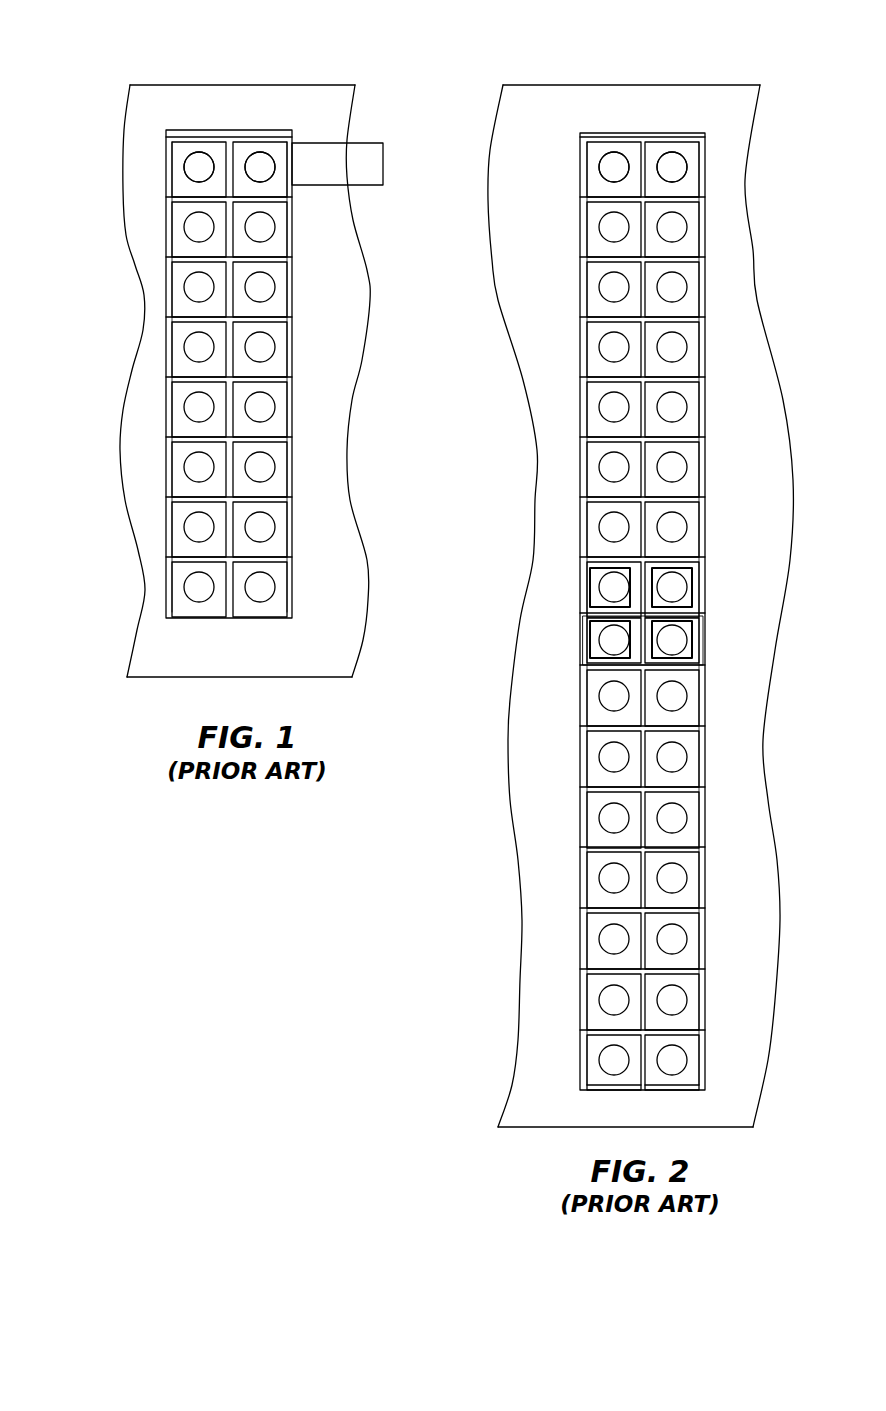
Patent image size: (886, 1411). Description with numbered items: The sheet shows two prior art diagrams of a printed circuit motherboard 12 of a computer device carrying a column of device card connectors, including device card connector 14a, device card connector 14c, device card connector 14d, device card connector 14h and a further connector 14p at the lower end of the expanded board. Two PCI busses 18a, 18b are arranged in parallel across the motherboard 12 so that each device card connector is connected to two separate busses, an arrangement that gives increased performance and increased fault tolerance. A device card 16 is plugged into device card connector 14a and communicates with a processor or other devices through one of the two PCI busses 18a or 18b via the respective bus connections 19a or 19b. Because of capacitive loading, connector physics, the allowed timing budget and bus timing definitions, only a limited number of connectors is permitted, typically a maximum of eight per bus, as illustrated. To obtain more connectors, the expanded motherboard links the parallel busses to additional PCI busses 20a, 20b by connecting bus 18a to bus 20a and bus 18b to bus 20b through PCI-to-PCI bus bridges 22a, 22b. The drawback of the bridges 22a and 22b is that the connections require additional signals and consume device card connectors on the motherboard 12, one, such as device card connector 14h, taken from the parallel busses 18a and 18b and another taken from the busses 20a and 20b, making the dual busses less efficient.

In FIG. 1, the printed circuit motherboard 12 is at (318, 93).
In FIG. 2, the printed circuit motherboard 12 is at (745, 110).
In FIG. 1, the device card connector 14a is at (165, 176).
In FIG. 2, the device card connector 14a is at (580, 168).
In FIG. 2, the device card connector 14c is at (577, 643).
In FIG. 1, the device card connector 14d is at (165, 352).
In FIG. 1, the device card connector 14h is at (165, 596).
In FIG. 2, the device card connector 14h is at (576, 584).
In FIG. 2, the terminal block position 14p is at (573, 1070).
In FIG. 1, the device card 16 is at (375, 163).
In FIG. 1, the PCI bus 18a is at (196, 124).
In FIG. 2, the PCI bus 18a is at (603, 127).
In FIG. 1, the PCI bus 18b is at (266, 124).
In FIG. 2, the PCI bus 18b is at (680, 127).
In FIG. 1, the bus connection 19a is at (205, 175).
In FIG. 2, the bus connection 19a is at (627, 173).
In FIG. 1, the bus connection 19b is at (270, 172).
In FIG. 2, the bus connection 19b is at (690, 163).
In FIG. 2, the PCI bus 20a is at (600, 1083).
In FIG. 2, the PCI bus 20b is at (668, 1083).
In FIG. 2, the PCI-to-PCI bus bridge 22a is at (588, 652).
In FIG. 2, the PCI-to-PCI bus bridge 22b is at (692, 650).